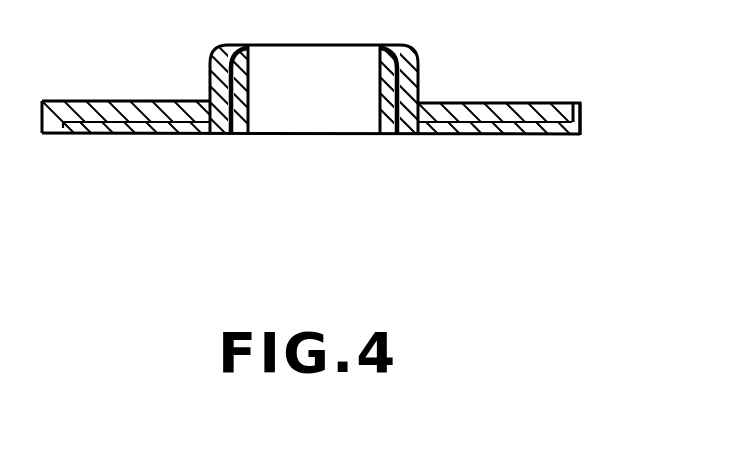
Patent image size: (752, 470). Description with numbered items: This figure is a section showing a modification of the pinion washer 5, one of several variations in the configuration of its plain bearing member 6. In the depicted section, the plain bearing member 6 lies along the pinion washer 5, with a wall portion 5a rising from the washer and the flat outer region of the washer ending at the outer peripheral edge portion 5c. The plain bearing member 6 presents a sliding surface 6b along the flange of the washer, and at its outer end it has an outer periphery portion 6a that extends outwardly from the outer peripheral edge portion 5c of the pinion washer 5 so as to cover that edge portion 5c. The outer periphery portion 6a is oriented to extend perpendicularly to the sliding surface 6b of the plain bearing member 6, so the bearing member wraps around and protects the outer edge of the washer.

The pinion washer 5 is at (428, 136).
The cylindrical wall portion of shell 5a is at (221, 72).
The outer peripheral edge portion 5c is at (549, 136).
The plain bearing member 6 is at (122, 100).
The outer periphery portion 6a is at (582, 112).
The sliding surface 6b is at (508, 103).